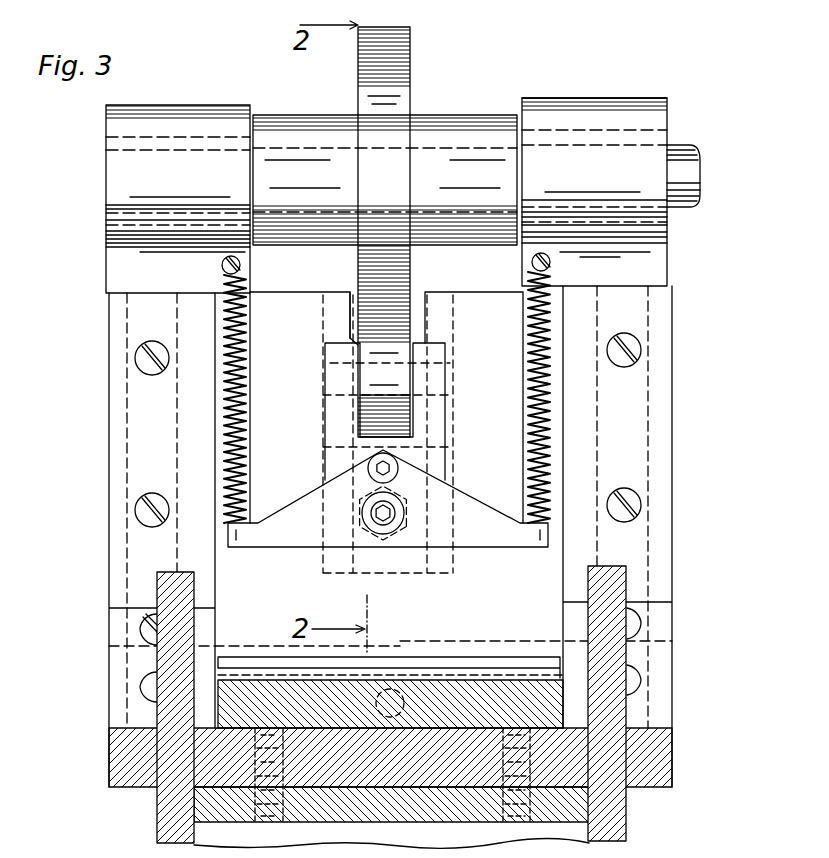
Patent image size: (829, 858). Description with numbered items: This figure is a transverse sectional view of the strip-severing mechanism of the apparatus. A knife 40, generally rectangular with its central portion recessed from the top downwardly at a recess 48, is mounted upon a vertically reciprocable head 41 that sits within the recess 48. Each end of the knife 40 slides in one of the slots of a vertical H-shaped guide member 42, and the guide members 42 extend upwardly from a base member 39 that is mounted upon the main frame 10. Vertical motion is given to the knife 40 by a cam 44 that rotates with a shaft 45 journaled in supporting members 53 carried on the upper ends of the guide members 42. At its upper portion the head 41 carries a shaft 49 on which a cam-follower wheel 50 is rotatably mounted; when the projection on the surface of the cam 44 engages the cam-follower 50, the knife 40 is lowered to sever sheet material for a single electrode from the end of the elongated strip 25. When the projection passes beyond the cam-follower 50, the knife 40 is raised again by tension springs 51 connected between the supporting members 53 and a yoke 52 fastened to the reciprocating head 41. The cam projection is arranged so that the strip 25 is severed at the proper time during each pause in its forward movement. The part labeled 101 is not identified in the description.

The main frame 10 is at (157, 812).
The elongated strip 25 is at (425, 660).
The base member 39 is at (662, 787).
The knife 40 is at (292, 294).
The vertically reciprocable head 41 is at (334, 340).
The H-shaped guide member 42 is at (140, 316).
The cam 44 is at (410, 56).
The shaft 45 is at (437, 147).
The recess 48 is at (417, 298).
The shaft 49 is at (342, 398).
The cam-follower wheel 50 is at (372, 352).
The tension springs 51 is at (246, 401).
The yoke 52 is at (297, 550).
The supporting members 53 is at (210, 106).
The roller block cap 101 is at (636, 98).